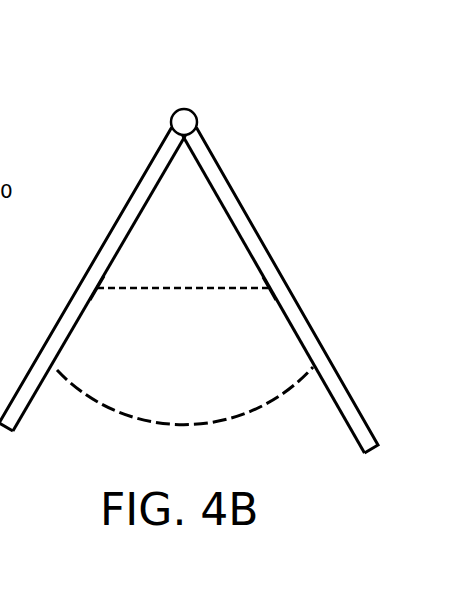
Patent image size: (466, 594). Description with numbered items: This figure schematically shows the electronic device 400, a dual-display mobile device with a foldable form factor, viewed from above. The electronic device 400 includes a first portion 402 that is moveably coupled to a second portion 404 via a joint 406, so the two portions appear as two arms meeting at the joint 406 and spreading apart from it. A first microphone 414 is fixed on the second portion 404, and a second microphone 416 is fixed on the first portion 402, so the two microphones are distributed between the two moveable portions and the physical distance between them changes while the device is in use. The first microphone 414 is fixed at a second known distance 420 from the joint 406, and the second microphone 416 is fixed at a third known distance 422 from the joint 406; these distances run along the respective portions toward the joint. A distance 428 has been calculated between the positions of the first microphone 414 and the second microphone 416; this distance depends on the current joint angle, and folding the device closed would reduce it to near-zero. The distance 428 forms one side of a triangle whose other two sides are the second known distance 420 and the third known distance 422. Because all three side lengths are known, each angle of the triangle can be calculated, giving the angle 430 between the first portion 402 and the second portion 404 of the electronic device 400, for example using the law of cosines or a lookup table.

The electronic device 400 is at (189, 263).
The first portion 402 is at (92, 300).
The second portion 404 is at (280, 304).
The joint 406 is at (192, 109).
The first microphone 414 is at (262, 288).
The second microphone 416 is at (99, 288).
The second known distance 420 is at (141, 210).
The third known distance 422 is at (225, 208).
The distance 428 is at (180, 290).
The angle 430 is at (176, 428).